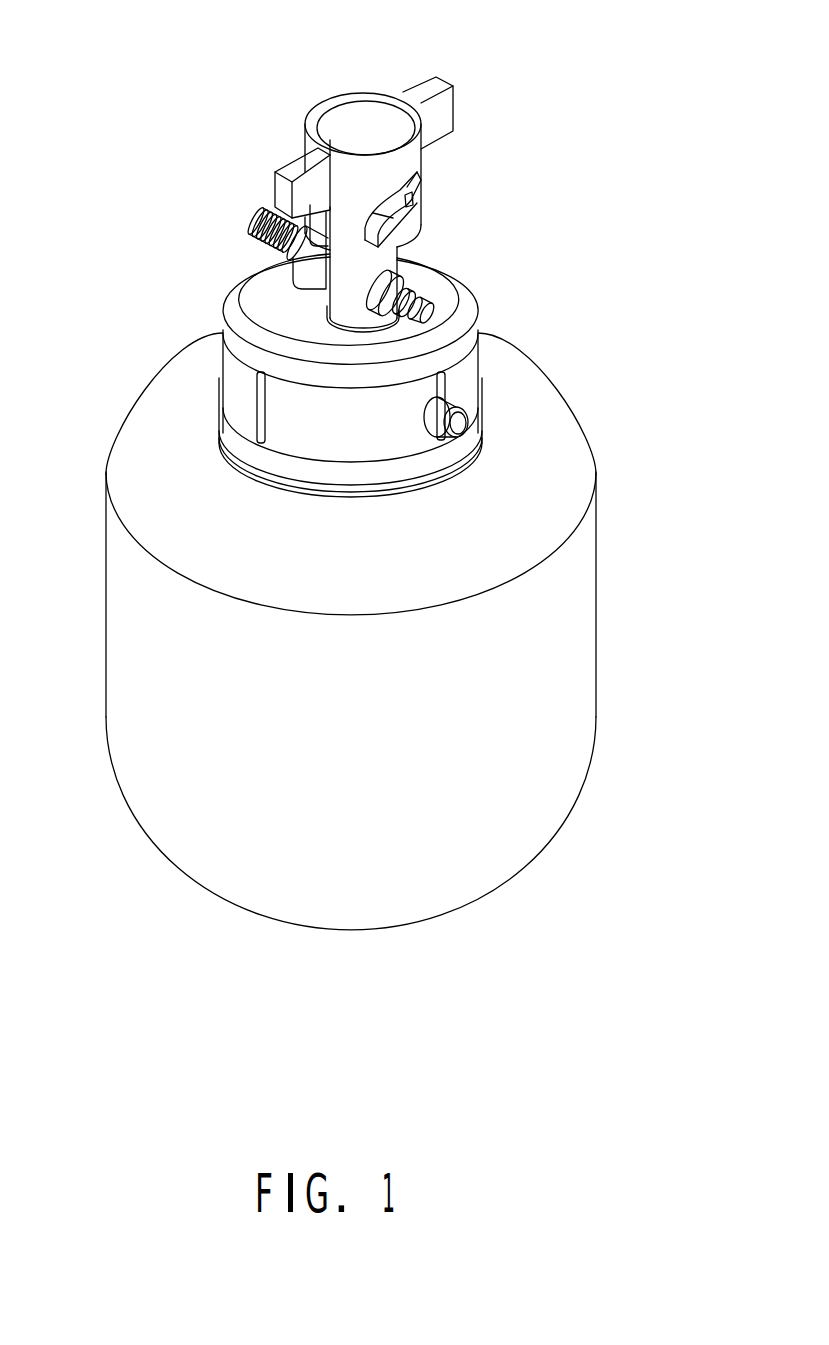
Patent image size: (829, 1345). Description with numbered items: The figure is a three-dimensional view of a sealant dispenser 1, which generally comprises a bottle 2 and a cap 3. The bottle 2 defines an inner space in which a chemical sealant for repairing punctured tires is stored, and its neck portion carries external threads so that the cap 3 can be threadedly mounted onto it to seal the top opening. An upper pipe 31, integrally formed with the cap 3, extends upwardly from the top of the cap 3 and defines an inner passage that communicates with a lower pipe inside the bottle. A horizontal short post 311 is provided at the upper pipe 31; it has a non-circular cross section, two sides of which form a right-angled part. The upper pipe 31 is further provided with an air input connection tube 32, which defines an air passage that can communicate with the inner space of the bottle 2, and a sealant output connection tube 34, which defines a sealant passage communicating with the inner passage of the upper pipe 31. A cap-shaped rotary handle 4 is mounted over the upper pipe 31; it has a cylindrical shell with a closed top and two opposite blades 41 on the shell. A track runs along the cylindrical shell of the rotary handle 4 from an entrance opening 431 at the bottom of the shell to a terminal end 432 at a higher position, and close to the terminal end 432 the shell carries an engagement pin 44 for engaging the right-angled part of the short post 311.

The sealant dispenser 1 is at (220, 93).
The bottle 2 is at (203, 843).
The cap 3 is at (467, 388).
The upper pipe 31 is at (385, 258).
The short post 311 is at (300, 258).
The air input connection tube 32 is at (255, 230).
The sealant output connection tube 34 is at (437, 298).
The rotary handle 4 is at (356, 105).
The blade 41 is at (440, 115).
The entrance opening 431 is at (358, 209).
The terminal end 432 is at (417, 173).
The engagement pin 44 is at (417, 200).